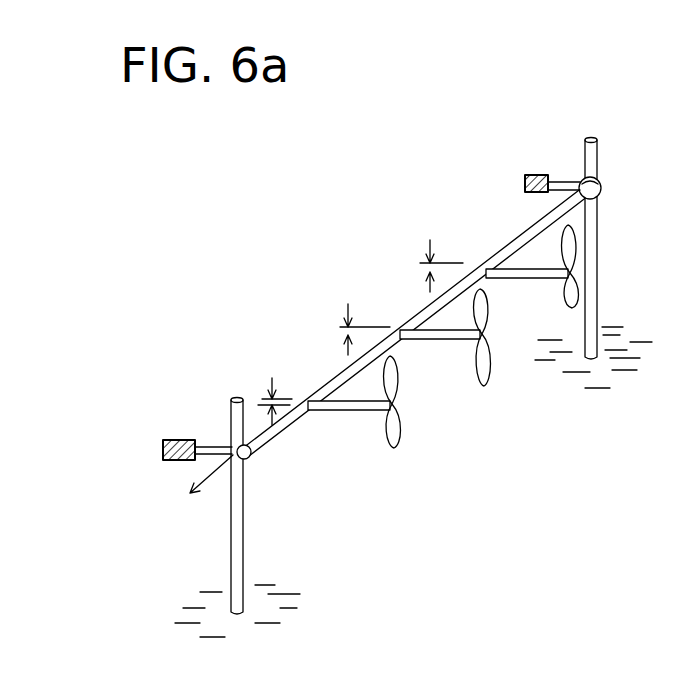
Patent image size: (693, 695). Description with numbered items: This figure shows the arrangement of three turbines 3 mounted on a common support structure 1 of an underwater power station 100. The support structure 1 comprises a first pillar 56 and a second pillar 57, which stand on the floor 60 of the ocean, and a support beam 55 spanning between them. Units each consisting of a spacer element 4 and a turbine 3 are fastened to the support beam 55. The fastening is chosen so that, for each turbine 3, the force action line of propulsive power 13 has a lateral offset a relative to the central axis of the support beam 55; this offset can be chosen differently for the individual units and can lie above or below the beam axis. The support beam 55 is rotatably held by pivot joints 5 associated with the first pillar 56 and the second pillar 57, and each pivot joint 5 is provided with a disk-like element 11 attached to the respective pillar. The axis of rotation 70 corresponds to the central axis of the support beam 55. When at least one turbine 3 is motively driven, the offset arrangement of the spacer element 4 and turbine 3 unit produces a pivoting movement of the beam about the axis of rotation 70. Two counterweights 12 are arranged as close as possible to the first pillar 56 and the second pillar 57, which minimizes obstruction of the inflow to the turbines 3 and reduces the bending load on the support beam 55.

The underwater power station 100 is at (357, 198).
The support structure 1 is at (233, 498).
The turbine 3 is at (400, 440).
The spacer element 4 is at (350, 410).
The pivot joint 5 is at (248, 460).
The disk-like element 11 is at (251, 456).
The counterweight 12 is at (176, 440).
The force action line of propulsive power 13 is at (458, 272).
The support beam 55 is at (522, 229).
The first pillar 56 is at (246, 537).
The second pillar 57 is at (598, 235).
The floor 60 is at (345, 620).
The axis of rotation 70 is at (210, 472).